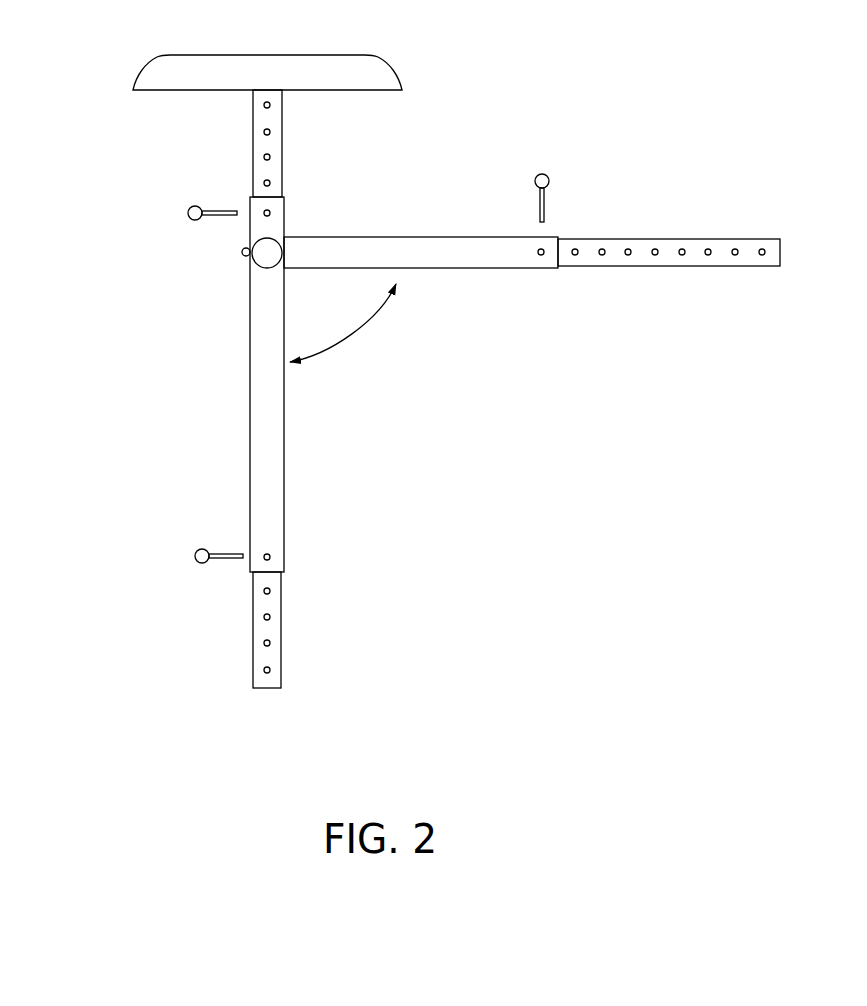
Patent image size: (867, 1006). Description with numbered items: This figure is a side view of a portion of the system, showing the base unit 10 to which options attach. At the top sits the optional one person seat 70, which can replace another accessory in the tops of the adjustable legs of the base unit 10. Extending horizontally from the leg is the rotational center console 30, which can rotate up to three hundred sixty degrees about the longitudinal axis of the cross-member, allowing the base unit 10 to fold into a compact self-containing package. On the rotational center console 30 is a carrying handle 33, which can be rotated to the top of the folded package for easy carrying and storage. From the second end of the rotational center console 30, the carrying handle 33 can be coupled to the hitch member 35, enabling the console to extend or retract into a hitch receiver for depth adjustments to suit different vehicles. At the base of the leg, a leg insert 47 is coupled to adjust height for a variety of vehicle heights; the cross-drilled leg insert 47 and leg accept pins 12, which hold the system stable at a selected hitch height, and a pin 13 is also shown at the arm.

The base unit 10 is at (158, 328).
The pins 12 is at (225, 207).
The locking pin 13 is at (546, 246).
The rotational center console 30 is at (385, 235).
The carrying handle 33 is at (242, 252).
The hitch member 35 is at (632, 237).
The leg inserts 47 is at (283, 625).
The one person seat 70 is at (135, 77).